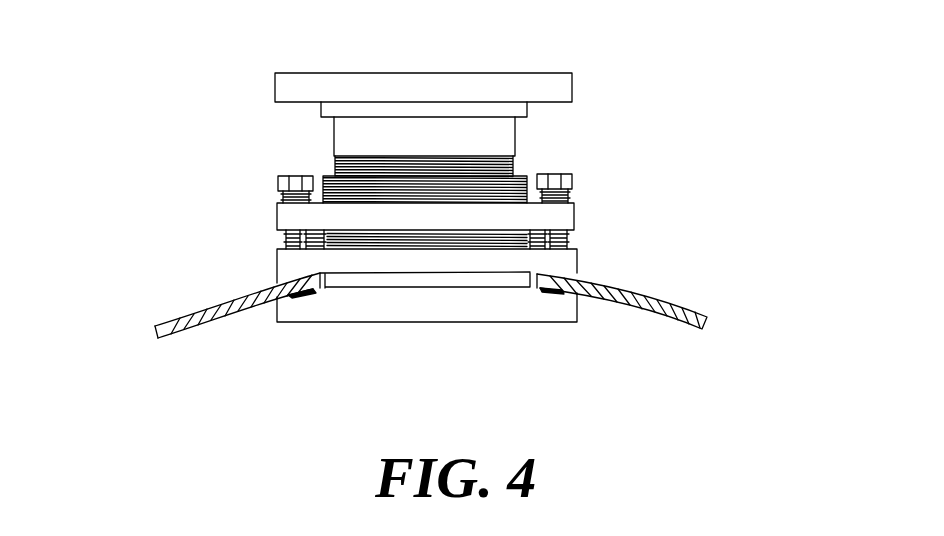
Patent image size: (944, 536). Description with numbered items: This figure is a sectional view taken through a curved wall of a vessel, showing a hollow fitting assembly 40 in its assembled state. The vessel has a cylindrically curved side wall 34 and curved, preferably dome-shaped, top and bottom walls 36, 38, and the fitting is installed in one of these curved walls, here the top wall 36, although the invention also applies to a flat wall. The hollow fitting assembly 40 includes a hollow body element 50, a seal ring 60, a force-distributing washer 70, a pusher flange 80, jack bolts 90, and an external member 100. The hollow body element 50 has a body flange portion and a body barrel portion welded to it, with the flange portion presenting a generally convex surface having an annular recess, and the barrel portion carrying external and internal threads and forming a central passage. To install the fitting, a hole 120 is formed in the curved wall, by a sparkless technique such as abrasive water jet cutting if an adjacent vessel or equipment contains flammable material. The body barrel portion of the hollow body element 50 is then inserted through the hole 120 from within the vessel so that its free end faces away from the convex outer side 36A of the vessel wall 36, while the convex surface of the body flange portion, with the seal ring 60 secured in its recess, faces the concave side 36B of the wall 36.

The hollow fitting assembly 40 is at (641, 78).
The external member 100 is at (271, 90).
The jack bolts 90 is at (274, 183).
The pusher flange 80 is at (579, 213).
The force-distributing washer 70 is at (275, 266).
The hollow body element 50 is at (508, 325).
The hole 120 is at (328, 284).
The seal ring 60 is at (303, 299).
The convex outer side 36A is at (177, 317).
The concave side 36B is at (205, 327).
The top wall 36 is at (671, 297).
The side wall 34 is at (622, 301).
The bottom wall 38 is at (622, 301).